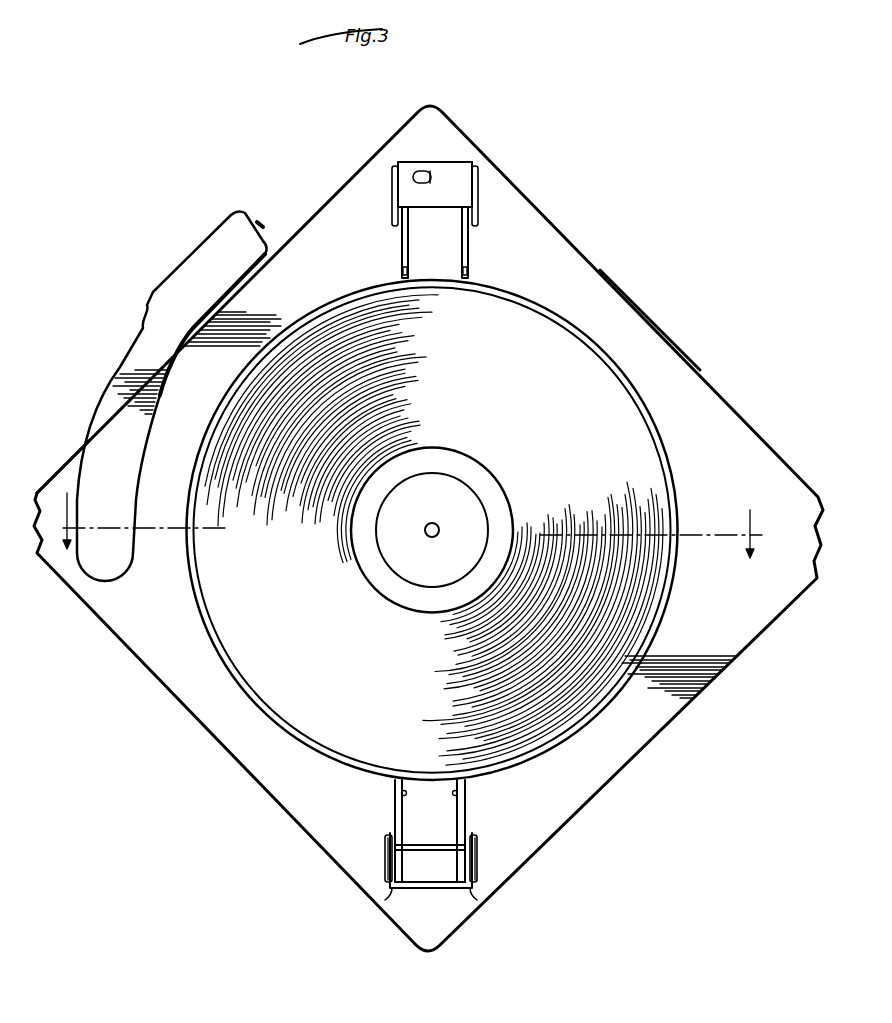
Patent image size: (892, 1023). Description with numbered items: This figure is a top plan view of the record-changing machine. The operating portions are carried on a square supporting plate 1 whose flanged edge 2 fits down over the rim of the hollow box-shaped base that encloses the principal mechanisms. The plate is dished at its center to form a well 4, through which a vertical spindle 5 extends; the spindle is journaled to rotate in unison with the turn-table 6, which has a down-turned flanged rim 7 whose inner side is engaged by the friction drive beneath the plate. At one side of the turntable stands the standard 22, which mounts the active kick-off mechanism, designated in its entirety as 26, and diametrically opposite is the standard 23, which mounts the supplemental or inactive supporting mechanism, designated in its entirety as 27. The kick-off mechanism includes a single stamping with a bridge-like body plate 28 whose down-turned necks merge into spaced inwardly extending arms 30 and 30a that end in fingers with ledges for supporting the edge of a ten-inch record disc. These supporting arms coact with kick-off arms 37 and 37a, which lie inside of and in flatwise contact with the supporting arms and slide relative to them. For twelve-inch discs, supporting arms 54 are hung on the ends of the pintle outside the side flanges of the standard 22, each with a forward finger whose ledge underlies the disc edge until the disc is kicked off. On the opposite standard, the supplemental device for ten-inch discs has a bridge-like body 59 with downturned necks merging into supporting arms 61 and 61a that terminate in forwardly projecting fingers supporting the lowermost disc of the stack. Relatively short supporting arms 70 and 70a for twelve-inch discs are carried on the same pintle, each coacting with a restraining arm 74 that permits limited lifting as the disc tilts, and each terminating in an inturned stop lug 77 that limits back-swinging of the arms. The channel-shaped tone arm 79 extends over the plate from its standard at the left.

The supporting plate 1 is at (600, 296).
The flanged edge 2 is at (660, 330).
The well 4 is at (408, 525).
The vertical spindle 5 is at (436, 526).
The turn-table 6 is at (657, 622).
The down-turned flanged rim 7 is at (655, 647).
The standard 22 is at (474, 163).
The standard 23 is at (423, 846).
The active kick-off mechanism 26 is at (439, 194).
The supplemental supporting mechanism 27 is at (432, 857).
The bridge-like body plate 28 is at (447, 172).
The inwardly extending arm 30 is at (399, 249).
The inwardly extending arm 30a is at (470, 250).
The kick-off arm 37 is at (408, 266).
The kick-off arm 37a is at (462, 235).
The supporting arm 54 is at (394, 208).
The bridge-like body 59 is at (418, 881).
The supporting arm 61 is at (403, 807).
The supporting arm 61a is at (457, 821).
The supporting arm 70 is at (386, 860).
The supporting arm 70a is at (470, 847).
The restraining arm 74 is at (386, 841).
The inturned stop lug 77 is at (392, 893).
The tone arm 79 is at (165, 342).